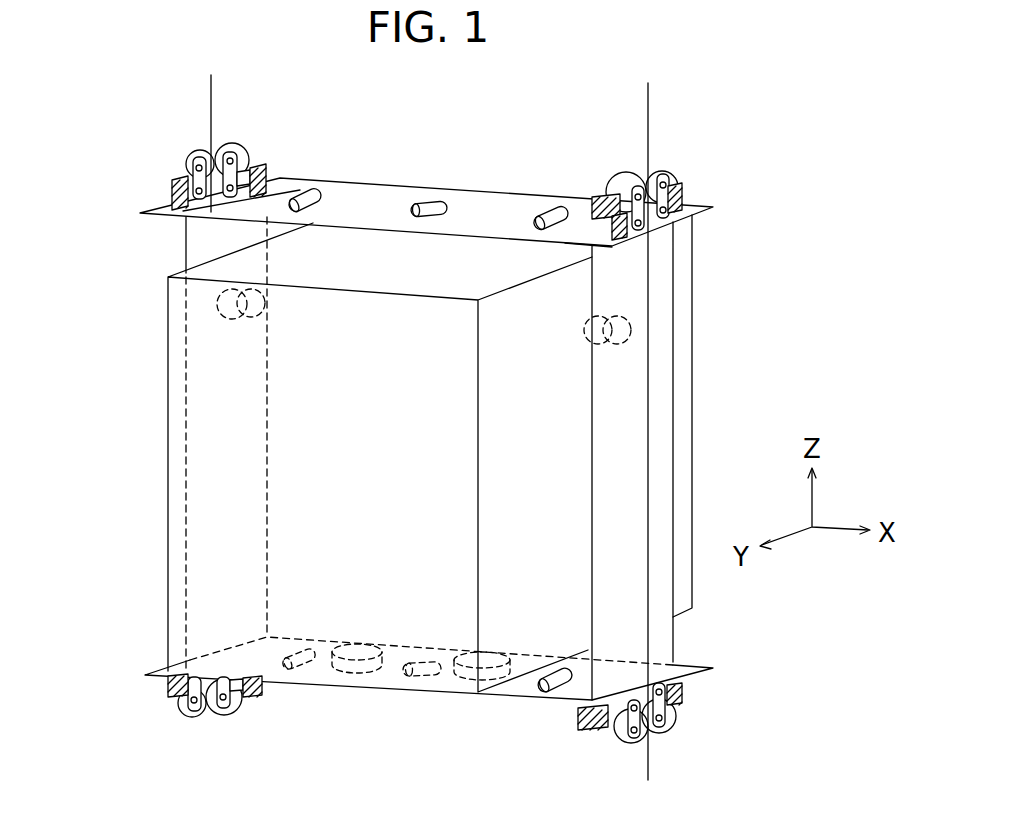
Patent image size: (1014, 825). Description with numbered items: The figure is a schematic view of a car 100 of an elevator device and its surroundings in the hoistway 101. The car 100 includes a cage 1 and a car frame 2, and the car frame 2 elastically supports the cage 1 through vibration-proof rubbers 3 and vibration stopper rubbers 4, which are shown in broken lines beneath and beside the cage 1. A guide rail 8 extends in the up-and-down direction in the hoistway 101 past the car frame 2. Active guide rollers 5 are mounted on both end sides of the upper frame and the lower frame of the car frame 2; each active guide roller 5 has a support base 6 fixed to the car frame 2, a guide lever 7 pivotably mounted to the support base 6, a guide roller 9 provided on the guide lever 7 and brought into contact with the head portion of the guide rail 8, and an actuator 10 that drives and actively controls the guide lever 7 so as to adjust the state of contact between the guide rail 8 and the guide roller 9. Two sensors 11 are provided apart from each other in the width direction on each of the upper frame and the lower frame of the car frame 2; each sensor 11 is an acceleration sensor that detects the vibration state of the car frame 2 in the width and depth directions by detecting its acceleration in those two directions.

The cage 1 is at (688, 350).
The car frame 2 is at (667, 393).
The vibration-proof rubber 3 is at (343, 682).
The vibration stopper rubber 4 is at (217, 293).
The active guide roller 5 is at (397, 438).
The support base 6 is at (140, 213).
The guide lever 7 is at (217, 176).
The guide rail 8 is at (210, 104).
The guide roller 9 is at (220, 137).
The actuator 10 is at (380, 416).
The sensor 11 is at (306, 192).
The car 100 is at (694, 457).
The hoistway 101 is at (143, 590).